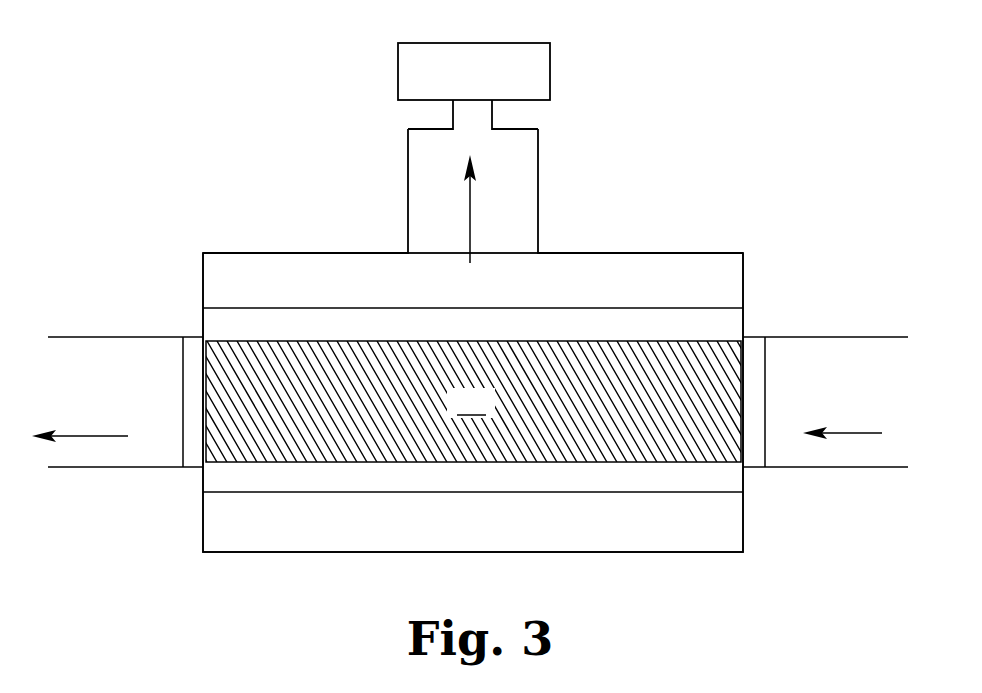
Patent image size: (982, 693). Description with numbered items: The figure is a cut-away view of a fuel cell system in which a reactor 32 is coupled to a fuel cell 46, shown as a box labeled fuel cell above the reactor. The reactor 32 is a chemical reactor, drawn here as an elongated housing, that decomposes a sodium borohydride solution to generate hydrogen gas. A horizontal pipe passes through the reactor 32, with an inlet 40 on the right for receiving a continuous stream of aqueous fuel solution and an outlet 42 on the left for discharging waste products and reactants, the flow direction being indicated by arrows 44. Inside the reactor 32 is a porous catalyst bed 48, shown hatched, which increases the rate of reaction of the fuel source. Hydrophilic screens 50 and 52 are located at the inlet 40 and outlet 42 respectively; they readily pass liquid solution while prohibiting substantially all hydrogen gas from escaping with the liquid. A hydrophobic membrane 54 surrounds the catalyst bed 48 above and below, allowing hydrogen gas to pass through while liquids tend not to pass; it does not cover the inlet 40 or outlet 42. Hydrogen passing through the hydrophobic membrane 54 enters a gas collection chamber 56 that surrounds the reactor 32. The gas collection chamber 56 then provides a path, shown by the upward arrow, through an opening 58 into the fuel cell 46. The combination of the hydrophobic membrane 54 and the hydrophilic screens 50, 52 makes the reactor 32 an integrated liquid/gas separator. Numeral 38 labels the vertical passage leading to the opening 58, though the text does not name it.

The reactor 32 is at (272, 190).
The outlet tube 38 is at (523, 169).
The inlet 40 is at (828, 358).
The outlet 42 is at (133, 362).
The arrows 44 is at (87, 436).
The fuel cell 46 is at (551, 63).
The porous catalyst bed 48 is at (471, 222).
The hydrophilic screen 50 is at (757, 445).
The hydrophilic screen 52 is at (193, 452).
The hydrophobic membrane 54 is at (702, 318).
The gas collection chamber 56 is at (590, 272).
The opening 58 is at (452, 111).